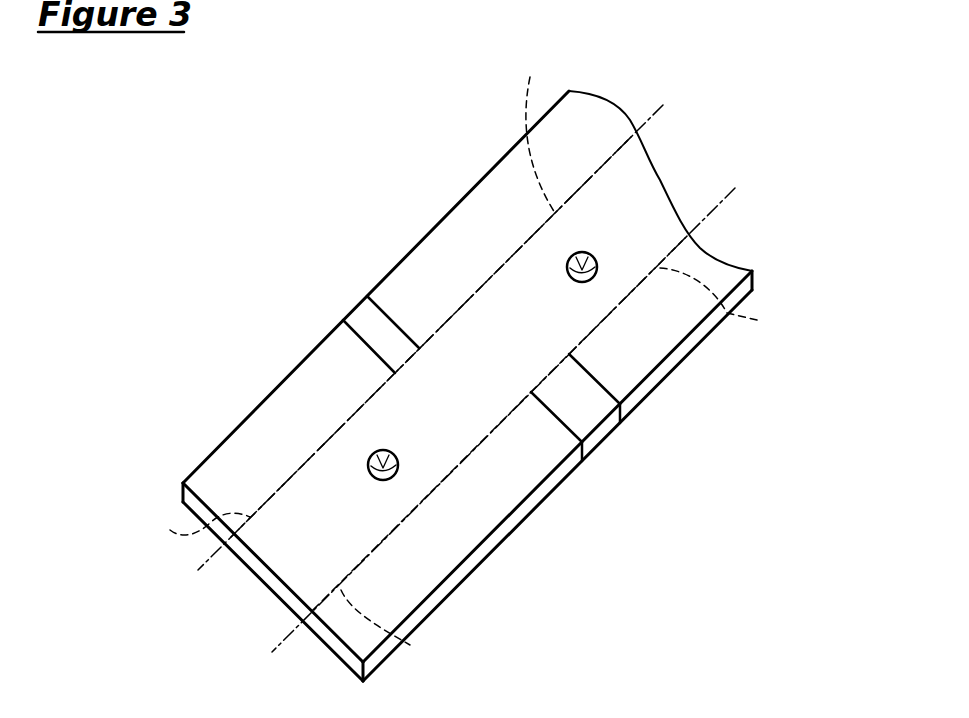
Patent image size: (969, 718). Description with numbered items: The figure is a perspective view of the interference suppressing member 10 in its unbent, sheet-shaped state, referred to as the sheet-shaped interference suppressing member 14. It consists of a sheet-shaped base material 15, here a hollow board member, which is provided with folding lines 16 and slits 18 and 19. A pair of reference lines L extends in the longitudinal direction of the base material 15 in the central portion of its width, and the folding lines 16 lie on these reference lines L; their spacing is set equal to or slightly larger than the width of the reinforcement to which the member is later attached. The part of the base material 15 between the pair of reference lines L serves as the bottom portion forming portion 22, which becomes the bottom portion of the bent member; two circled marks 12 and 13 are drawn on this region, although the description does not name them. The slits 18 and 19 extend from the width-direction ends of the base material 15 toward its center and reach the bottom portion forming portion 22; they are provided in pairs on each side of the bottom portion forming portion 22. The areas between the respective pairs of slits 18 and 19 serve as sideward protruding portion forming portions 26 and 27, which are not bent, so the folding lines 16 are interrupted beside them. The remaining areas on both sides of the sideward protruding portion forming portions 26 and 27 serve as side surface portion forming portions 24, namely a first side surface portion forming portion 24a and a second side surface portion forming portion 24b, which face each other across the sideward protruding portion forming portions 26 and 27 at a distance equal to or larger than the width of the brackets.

The interference suppressing member 10 is at (310, 197).
The first contact portion 12 is at (384, 466).
The second contact portion 13 is at (583, 268).
The sheet-shaped interference suppressing member 14 is at (308, 196).
The base material 15 is at (452, 598).
The folding lines 16 is at (466, 365).
The slits 18 is at (569, 423).
The slits 19 is at (381, 311).
The bottom portion forming portion 22 is at (292, 566).
The side surface portion forming portions 24 is at (413, 275).
The first side surface portion forming portion 24a is at (265, 425).
The second side surface portion forming portion 24b is at (412, 274).
The sideward protruding portion forming portion 26 is at (558, 397).
The sideward protruding portion forming portion 27 is at (380, 343).
The reference lines L is at (666, 108).